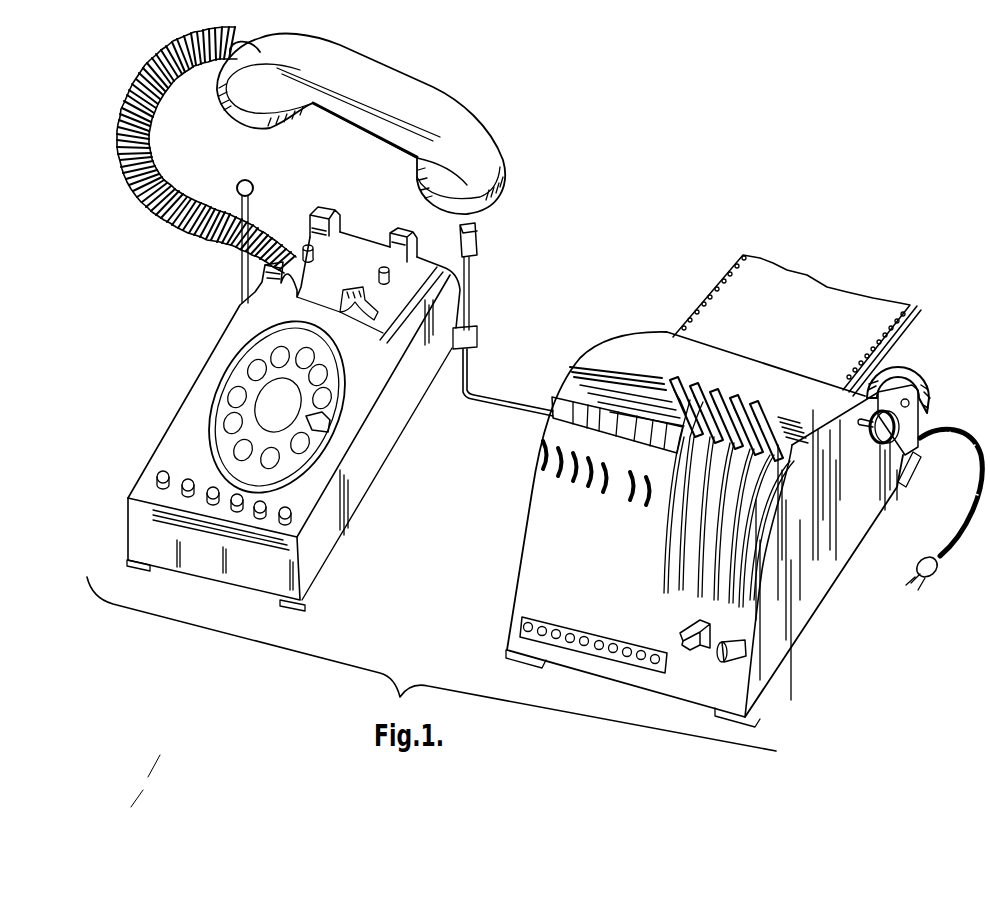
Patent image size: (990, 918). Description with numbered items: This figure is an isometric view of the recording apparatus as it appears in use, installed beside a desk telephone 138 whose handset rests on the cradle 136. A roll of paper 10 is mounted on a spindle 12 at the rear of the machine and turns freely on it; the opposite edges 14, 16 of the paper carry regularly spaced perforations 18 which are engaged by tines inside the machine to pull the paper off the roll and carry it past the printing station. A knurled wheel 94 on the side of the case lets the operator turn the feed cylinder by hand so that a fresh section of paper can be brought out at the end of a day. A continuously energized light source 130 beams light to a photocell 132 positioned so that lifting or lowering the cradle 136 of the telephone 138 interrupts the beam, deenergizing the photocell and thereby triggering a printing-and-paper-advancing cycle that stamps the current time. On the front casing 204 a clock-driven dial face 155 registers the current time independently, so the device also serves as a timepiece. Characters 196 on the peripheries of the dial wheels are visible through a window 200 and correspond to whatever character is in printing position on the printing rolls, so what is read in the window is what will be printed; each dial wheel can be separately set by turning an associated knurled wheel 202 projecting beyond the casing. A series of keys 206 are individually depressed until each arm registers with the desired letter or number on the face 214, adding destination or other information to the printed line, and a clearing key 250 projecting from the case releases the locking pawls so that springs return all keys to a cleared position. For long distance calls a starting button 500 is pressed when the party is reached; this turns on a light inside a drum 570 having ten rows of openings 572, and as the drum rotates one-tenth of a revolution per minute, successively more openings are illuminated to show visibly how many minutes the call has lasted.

The record tape 10 is at (828, 285).
The spindle 12 is at (912, 403).
The edge of the paper 14 is at (920, 318).
The edge of the paper 16 is at (723, 272).
The perforations 18 is at (747, 260).
The knurled wheel 94 is at (890, 437).
The light source 130 is at (253, 186).
The photocell 132 is at (480, 233).
The cradle 136 is at (418, 86).
The telephone 138 is at (400, 430).
The dial face 155 is at (607, 413).
The characters 196 is at (642, 422).
The window 200 is at (557, 420).
The wheel 202 is at (552, 463).
The front casing 204 is at (607, 563).
The keys 206 is at (752, 404).
The face 214 is at (707, 512).
The clearing key 250 is at (682, 640).
The starting button 500 is at (747, 652).
The drum 570 is at (568, 627).
The openings 572 is at (633, 661).